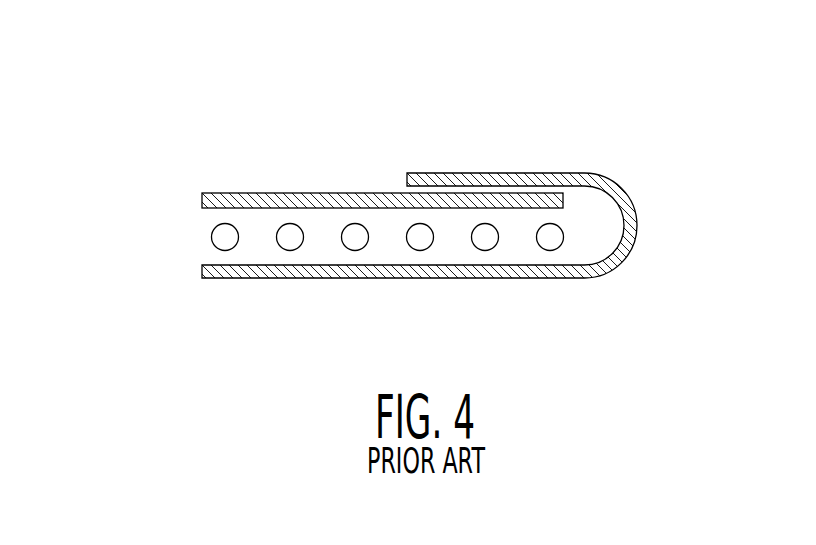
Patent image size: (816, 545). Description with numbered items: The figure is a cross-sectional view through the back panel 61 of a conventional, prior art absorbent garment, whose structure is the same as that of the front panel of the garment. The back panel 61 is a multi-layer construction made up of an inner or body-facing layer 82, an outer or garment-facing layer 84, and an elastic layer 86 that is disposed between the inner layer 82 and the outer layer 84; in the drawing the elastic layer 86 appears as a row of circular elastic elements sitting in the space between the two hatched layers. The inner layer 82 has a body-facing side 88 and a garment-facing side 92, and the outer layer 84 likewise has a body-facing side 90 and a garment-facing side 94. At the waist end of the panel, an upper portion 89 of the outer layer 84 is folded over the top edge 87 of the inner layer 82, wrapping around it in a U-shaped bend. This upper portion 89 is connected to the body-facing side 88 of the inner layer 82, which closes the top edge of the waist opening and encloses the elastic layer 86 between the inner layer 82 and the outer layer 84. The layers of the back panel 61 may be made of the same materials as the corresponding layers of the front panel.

The back panel 61 is at (395, 211).
The inner layer 82 is at (202, 200).
The outer layer 84 is at (202, 271).
The elastic layer 86 is at (182, 234).
The top edge 87 is at (565, 200).
The body-facing side 88 is at (340, 193).
The upper portion 89 is at (508, 169).
The body-facing side 90 is at (434, 262).
The garment-facing side 92 is at (258, 207).
The garment-facing side 94 is at (572, 278).